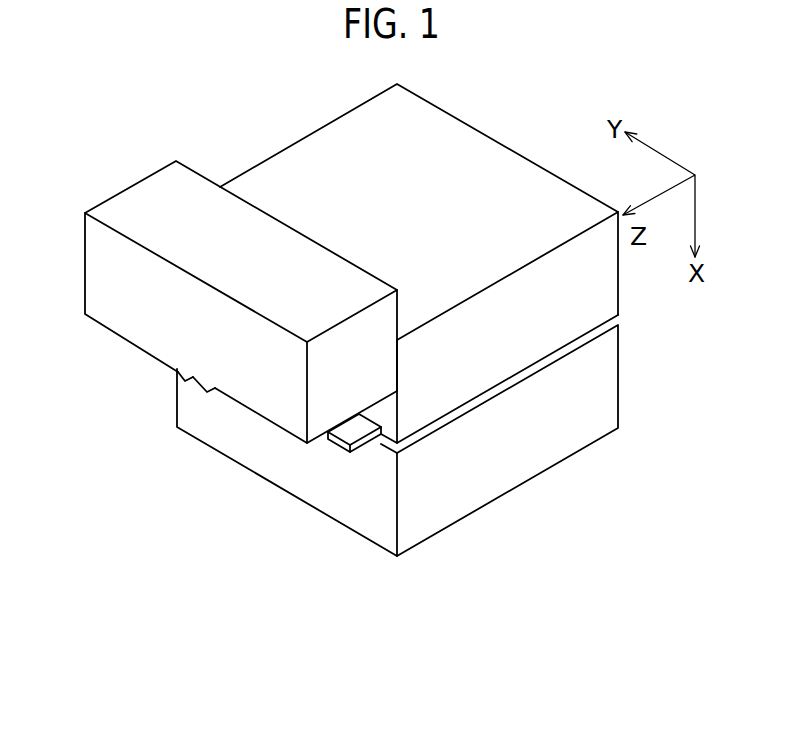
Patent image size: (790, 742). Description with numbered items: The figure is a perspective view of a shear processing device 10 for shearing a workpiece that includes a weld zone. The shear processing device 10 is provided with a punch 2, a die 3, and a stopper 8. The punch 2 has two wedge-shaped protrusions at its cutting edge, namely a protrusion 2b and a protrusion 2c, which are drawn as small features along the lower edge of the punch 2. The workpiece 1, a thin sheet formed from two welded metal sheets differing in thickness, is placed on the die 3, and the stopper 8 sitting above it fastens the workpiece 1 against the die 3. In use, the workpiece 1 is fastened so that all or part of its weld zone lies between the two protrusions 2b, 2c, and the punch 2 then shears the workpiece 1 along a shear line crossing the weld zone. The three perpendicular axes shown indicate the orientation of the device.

The shear processing device 10 is at (253, 133).
The stopper 8 is at (452, 137).
The punch 2 is at (145, 192).
The protrusion 2b is at (177, 377).
The protrusion 2c is at (203, 388).
The workpiece 1 is at (333, 443).
The die 3 is at (355, 515).